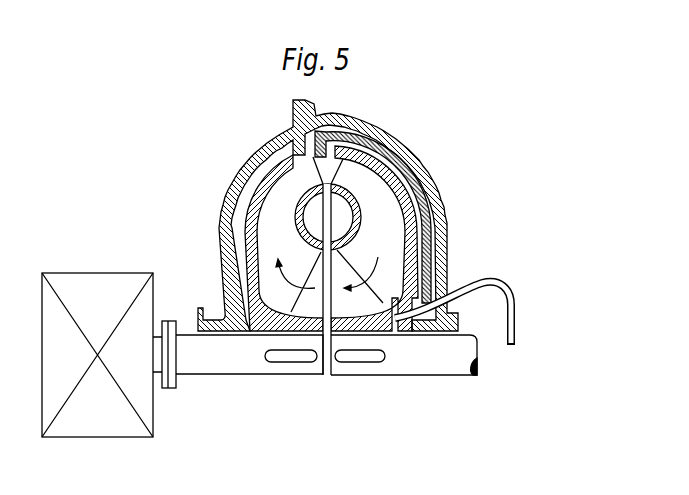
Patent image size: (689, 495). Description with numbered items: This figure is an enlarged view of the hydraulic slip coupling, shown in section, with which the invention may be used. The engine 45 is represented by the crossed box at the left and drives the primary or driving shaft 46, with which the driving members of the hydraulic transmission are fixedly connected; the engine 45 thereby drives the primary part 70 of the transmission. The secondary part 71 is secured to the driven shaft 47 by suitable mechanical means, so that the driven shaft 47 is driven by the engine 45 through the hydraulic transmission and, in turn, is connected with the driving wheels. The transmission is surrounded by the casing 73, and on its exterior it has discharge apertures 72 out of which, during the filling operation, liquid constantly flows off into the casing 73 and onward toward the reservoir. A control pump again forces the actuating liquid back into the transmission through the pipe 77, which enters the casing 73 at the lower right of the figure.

The engine 45 is at (97, 355).
The primary or driving shaft 46 is at (238, 354).
The driven shaft 47 is at (404, 355).
The primary part 70 is at (291, 261).
The secondary part 71 is at (365, 257).
The discharge apertures 72 is at (348, 133).
The casing 73 is at (258, 150).
The pipe 77 is at (468, 281).